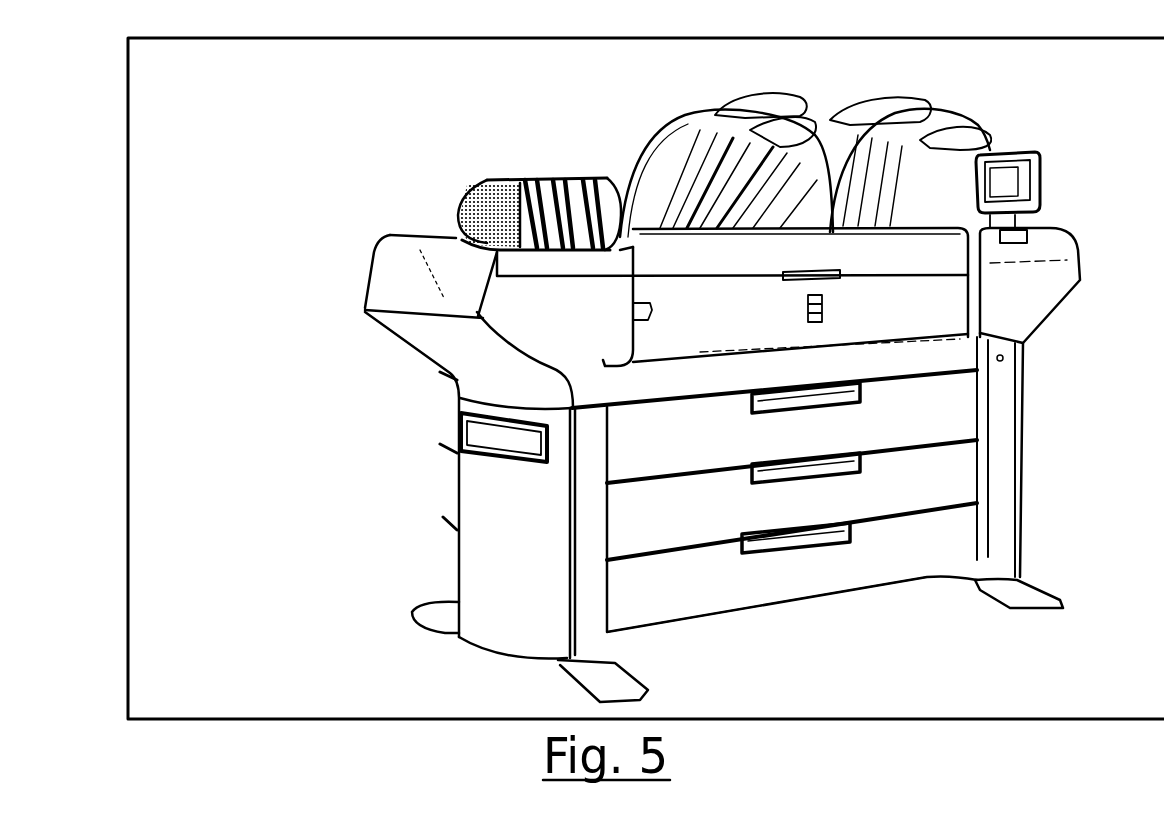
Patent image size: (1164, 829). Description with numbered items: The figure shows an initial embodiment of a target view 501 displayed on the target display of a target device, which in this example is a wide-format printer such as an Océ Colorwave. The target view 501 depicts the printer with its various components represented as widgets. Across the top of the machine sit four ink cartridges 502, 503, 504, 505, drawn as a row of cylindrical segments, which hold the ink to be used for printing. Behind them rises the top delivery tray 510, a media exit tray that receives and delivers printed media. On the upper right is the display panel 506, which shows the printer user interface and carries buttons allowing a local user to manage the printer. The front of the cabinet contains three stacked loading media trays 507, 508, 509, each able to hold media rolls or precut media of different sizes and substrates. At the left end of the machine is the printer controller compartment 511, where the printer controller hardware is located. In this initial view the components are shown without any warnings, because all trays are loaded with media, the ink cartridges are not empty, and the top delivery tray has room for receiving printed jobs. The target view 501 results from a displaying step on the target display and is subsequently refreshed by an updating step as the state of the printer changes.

The target view 501 is at (160, 81).
The ink cartridge 502 is at (522, 200).
The ink cartridge 503 is at (513, 188).
The ink cartridge 504 is at (573, 200).
The ink cartridge 505 is at (593, 182).
The display panel 506 is at (1033, 183).
The loading media tray 507 is at (938, 422).
The loading media tray 508 is at (938, 482).
The loading media tray 509 is at (937, 550).
The top delivery tray 510 is at (918, 142).
The printer controller compartment 511 is at (487, 518).